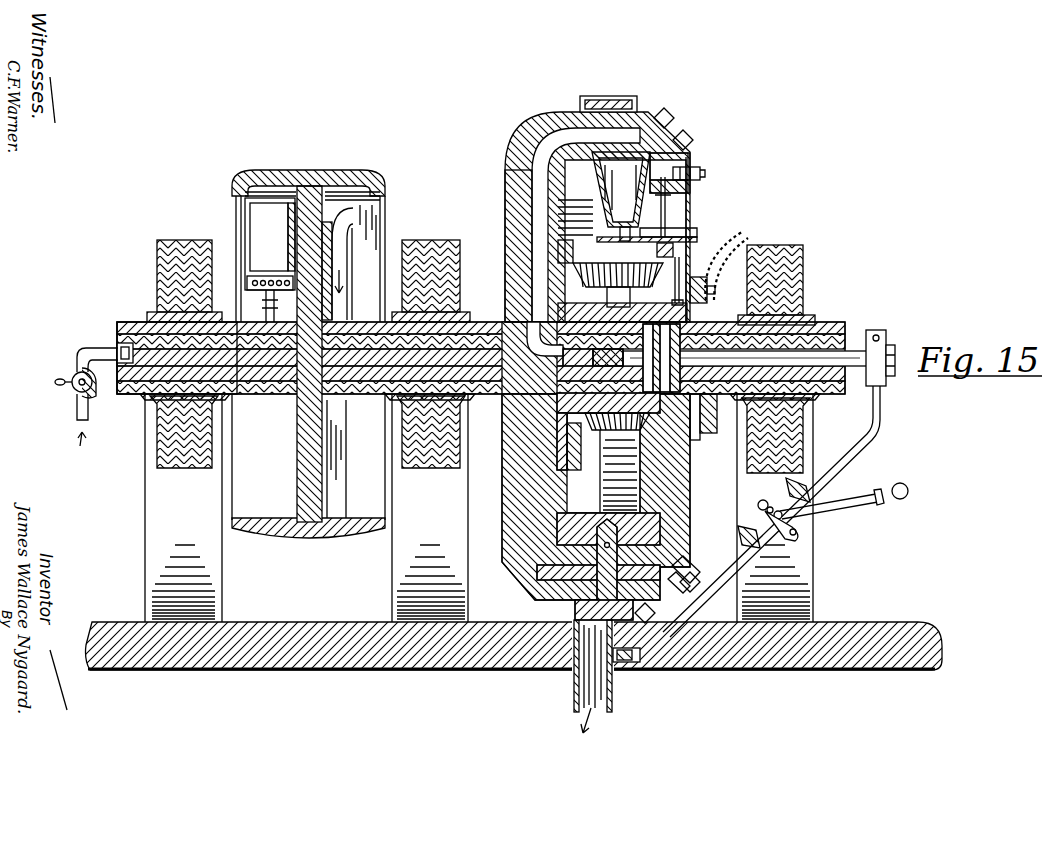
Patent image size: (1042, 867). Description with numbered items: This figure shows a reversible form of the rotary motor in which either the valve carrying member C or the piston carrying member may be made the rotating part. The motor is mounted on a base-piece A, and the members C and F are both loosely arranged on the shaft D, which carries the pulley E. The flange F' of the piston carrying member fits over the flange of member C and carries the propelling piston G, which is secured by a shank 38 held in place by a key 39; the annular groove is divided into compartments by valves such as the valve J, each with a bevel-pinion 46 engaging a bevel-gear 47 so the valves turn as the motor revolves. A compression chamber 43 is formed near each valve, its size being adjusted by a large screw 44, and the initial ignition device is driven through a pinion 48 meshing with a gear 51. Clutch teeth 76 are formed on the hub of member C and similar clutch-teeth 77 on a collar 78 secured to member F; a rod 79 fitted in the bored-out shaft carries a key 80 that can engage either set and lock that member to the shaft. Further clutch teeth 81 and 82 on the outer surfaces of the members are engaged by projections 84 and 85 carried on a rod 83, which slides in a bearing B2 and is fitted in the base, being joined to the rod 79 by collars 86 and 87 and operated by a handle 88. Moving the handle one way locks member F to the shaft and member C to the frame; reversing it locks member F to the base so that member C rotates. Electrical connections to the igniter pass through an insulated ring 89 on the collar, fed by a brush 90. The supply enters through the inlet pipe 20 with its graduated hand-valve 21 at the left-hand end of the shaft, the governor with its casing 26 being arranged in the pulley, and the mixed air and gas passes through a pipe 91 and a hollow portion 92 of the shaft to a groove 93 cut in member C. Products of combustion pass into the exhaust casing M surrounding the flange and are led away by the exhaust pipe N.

The inlet pipe 20 is at (75, 418).
The graduated hand-valve 21 is at (58, 384).
The casing 26 is at (250, 228).
The shank 38 is at (600, 580).
The key 39 is at (533, 672).
The compression chamber 43 is at (662, 172).
The adjustable screw 44 is at (705, 175).
The bevel-pinion 46 is at (573, 268).
The bevel-gear 47 is at (560, 428).
The pinion 48 is at (610, 247).
The gear 51 is at (658, 242).
The clutch teeth 76 is at (630, 400).
The clutch-teeth 77 is at (790, 316).
The collar 78 is at (697, 440).
The rod 79 is at (852, 352).
The key 80 is at (714, 421).
The clutch teeth 81 is at (672, 115).
The clutch teeth 82 is at (692, 141).
The rod 83 is at (852, 432).
The projection 84 is at (698, 574).
The projection 85 is at (637, 665).
The collar 86 is at (882, 343).
The collar 87 is at (889, 374).
The handle 88 is at (910, 490).
The ring 89 is at (704, 300).
The brush 90 is at (716, 302).
The pipe 91 is at (354, 232).
The hollow portion 92 is at (472, 356).
The groove 93 is at (528, 214).
The base-piece A is at (340, 658).
The bearing B2 is at (873, 488).
The member C is at (591, 214).
The shaft D is at (140, 364).
The pulley E is at (340, 163).
The flange F' is at (709, 167).
The propelling piston G is at (527, 540).
The valve J is at (628, 170).
The exhaust casing M is at (632, 93).
The exhaust pipe N is at (574, 707).